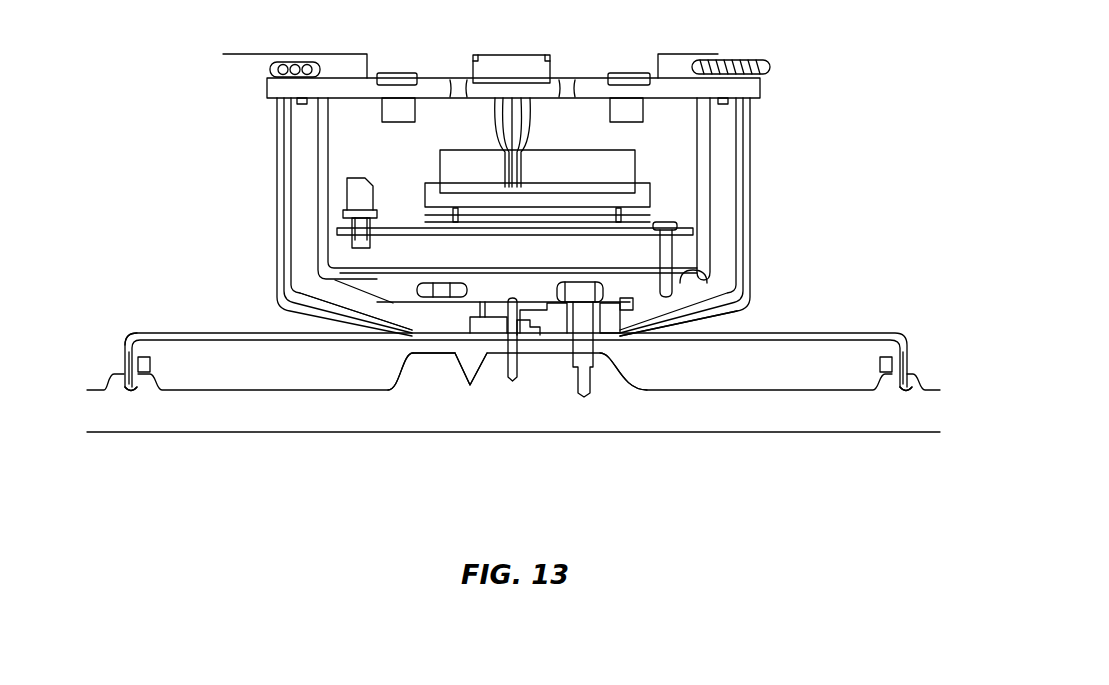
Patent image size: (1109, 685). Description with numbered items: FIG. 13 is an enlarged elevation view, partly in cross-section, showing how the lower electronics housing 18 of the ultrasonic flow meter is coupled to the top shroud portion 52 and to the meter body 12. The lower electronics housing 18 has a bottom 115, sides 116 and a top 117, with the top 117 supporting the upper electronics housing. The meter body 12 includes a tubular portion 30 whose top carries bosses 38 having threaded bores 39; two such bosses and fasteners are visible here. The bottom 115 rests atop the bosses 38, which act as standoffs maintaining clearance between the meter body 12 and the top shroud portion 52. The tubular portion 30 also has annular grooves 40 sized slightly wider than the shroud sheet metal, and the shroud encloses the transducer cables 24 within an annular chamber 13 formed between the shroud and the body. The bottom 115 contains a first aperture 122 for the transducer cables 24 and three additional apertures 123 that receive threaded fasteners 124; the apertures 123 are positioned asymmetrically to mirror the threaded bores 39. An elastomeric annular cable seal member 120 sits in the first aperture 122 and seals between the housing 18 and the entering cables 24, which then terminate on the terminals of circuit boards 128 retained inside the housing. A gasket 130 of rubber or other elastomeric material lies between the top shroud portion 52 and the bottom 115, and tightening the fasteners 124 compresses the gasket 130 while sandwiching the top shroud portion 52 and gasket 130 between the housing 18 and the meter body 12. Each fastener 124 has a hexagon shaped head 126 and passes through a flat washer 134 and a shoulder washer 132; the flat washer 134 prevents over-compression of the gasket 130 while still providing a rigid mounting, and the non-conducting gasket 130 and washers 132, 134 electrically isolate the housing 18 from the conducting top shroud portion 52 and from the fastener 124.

The meter body 12 is at (163, 423).
The annular chamber 13 is at (760, 358).
The lower electronics housing 18 is at (754, 112).
The transducer cables 24 is at (513, 380).
The tubular portion 30 is at (810, 390).
The bosses 38 is at (400, 382).
The threaded bores 39 is at (565, 380).
The annular grooves 40 is at (127, 392).
The top shroud portion 52 is at (125, 342).
The bottom 115 is at (352, 300).
The sides 116 is at (752, 192).
The top 117 is at (428, 83).
The cable seal member 120 is at (465, 375).
The first aperture 122 is at (487, 298).
The apertures 123 is at (548, 300).
The threaded fasteners 124 is at (442, 278).
The hexagon shaped head 126 is at (612, 292).
The circuit boards 128 is at (637, 250).
The gasket 130 is at (393, 335).
The shoulder washer 132 is at (625, 340).
The flat washer 134 is at (603, 360).